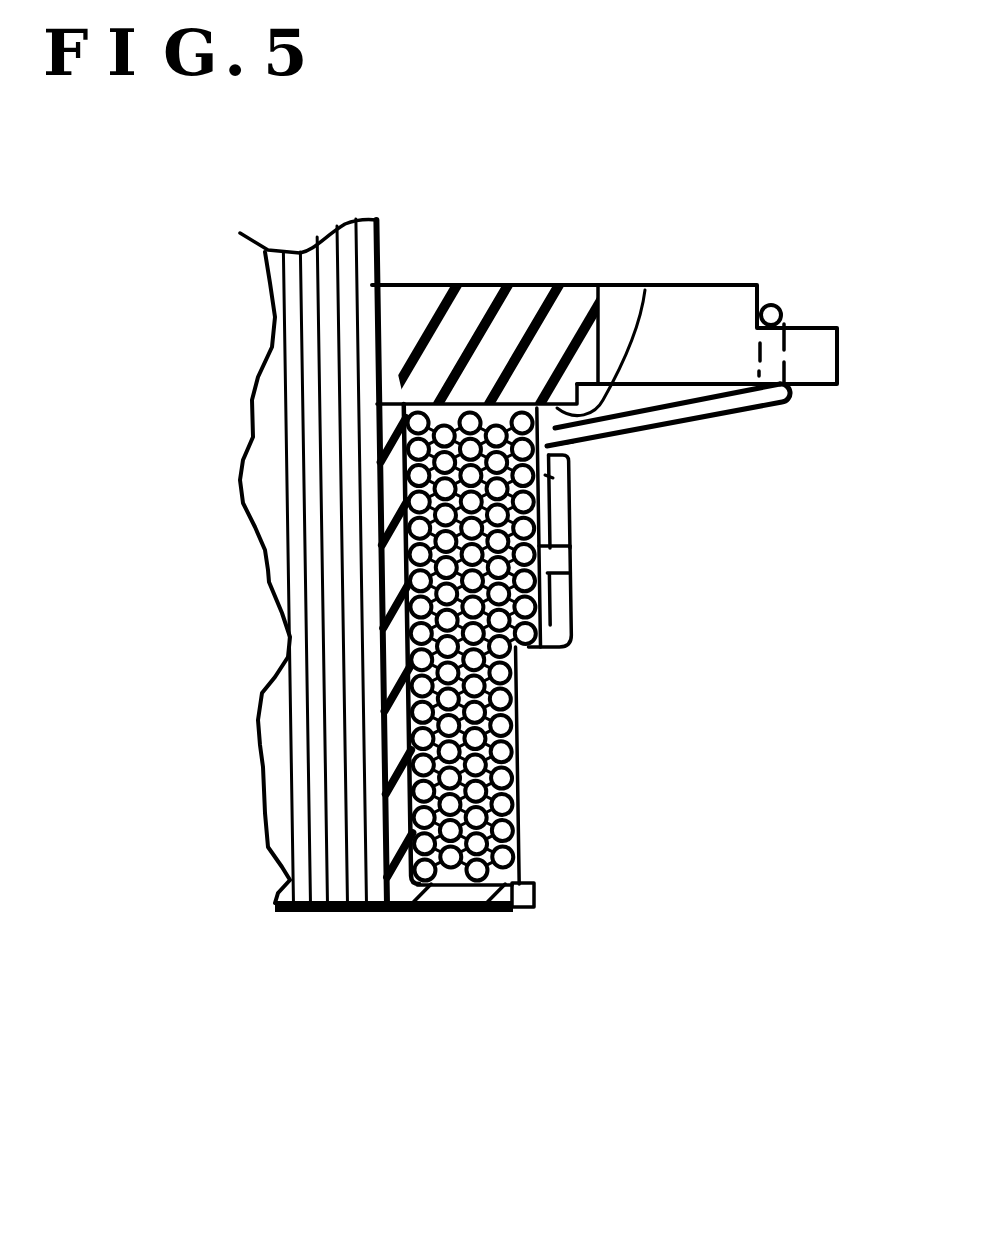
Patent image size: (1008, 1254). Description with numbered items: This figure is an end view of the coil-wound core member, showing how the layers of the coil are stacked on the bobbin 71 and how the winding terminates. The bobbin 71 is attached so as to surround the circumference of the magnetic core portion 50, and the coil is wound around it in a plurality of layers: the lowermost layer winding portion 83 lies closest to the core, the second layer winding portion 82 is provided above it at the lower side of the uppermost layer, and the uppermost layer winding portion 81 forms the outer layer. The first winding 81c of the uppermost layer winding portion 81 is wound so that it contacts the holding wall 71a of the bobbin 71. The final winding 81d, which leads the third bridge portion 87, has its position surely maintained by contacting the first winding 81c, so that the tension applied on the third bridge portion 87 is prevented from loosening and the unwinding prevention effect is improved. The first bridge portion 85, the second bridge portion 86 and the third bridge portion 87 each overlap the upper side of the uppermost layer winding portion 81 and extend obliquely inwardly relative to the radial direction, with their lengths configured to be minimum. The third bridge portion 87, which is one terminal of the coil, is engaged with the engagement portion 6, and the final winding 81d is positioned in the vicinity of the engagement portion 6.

The engagement portion 6 is at (695, 313).
The magnetic core portion 50 is at (328, 912).
The bobbin 71 is at (457, 903).
The holding wall 71a is at (645, 290).
The uppermost layer winding portion 81 is at (537, 670).
The first winding 81c is at (573, 445).
The final winding 81d is at (555, 477).
The second layer winding portion 82 is at (520, 908).
The lowermost layer winding portion 83 is at (417, 905).
The first bridge portion 85 is at (570, 610).
The second bridge portion 86 is at (570, 510).
The third bridge portion 87 is at (740, 405).